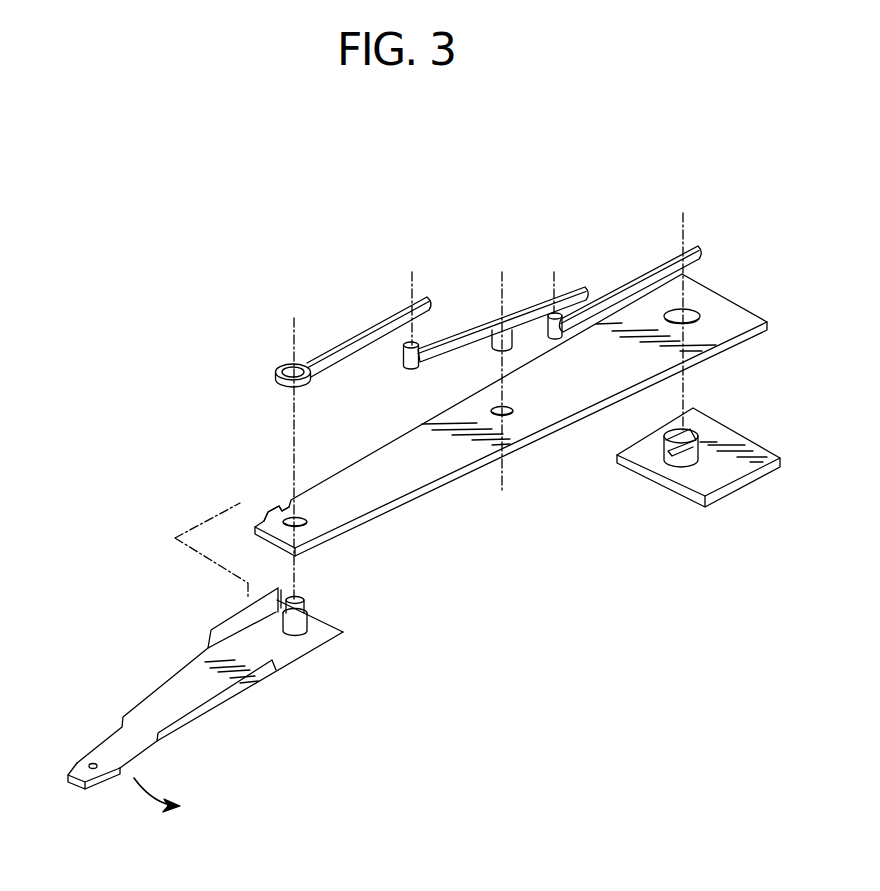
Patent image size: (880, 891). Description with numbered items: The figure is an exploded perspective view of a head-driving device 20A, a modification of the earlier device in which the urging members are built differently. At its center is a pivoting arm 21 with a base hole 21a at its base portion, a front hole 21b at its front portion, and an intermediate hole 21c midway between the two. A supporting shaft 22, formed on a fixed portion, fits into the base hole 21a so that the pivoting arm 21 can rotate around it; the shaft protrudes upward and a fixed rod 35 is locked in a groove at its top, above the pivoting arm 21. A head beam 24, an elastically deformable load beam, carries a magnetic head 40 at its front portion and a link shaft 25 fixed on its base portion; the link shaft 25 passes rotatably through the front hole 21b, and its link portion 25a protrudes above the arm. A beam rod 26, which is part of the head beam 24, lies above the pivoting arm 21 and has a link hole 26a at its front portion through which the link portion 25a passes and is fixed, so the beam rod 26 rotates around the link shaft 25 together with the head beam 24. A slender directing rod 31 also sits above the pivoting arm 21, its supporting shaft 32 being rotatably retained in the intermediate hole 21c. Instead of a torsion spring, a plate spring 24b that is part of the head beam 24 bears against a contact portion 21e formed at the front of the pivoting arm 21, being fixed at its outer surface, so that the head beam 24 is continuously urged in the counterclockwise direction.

The head-driving device 20A is at (527, 222).
The pivoting arm 21 is at (437, 466).
The base hole 21a is at (693, 316).
The front hole 21b is at (306, 522).
The intermediate hole 21c is at (512, 413).
The contact portion 21e is at (268, 511).
The supporting shaft 22 is at (680, 460).
The head beam 24 is at (283, 652).
The plate spring 24b is at (228, 638).
The link shaft 25 is at (306, 626).
The link portion 25a is at (303, 601).
The beam rod 26 is at (373, 330).
The link hole 26a is at (289, 364).
The directing rod 31 is at (502, 326).
The supporting shaft 32 is at (517, 348).
The fixed rod 35 is at (653, 270).
The magnetic head 40 is at (104, 790).